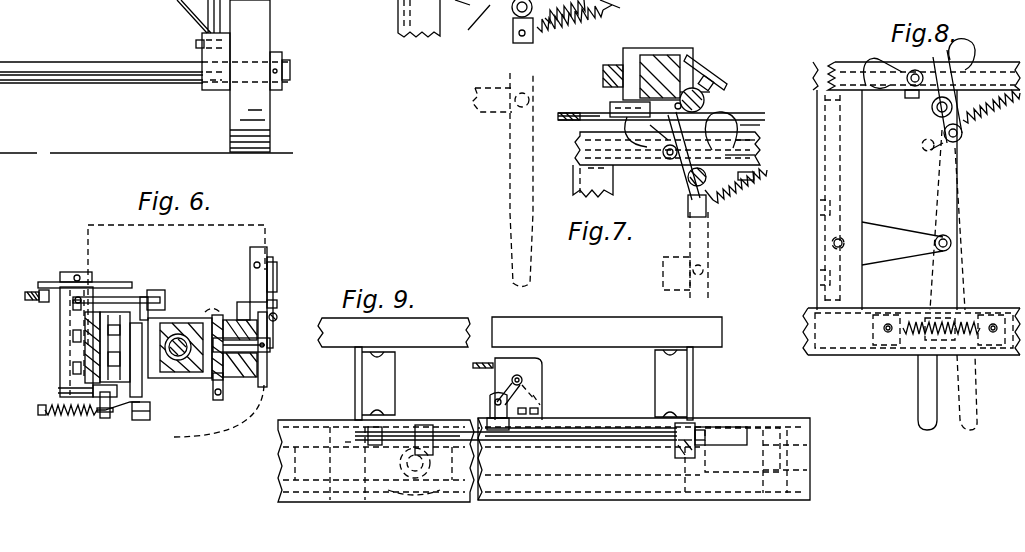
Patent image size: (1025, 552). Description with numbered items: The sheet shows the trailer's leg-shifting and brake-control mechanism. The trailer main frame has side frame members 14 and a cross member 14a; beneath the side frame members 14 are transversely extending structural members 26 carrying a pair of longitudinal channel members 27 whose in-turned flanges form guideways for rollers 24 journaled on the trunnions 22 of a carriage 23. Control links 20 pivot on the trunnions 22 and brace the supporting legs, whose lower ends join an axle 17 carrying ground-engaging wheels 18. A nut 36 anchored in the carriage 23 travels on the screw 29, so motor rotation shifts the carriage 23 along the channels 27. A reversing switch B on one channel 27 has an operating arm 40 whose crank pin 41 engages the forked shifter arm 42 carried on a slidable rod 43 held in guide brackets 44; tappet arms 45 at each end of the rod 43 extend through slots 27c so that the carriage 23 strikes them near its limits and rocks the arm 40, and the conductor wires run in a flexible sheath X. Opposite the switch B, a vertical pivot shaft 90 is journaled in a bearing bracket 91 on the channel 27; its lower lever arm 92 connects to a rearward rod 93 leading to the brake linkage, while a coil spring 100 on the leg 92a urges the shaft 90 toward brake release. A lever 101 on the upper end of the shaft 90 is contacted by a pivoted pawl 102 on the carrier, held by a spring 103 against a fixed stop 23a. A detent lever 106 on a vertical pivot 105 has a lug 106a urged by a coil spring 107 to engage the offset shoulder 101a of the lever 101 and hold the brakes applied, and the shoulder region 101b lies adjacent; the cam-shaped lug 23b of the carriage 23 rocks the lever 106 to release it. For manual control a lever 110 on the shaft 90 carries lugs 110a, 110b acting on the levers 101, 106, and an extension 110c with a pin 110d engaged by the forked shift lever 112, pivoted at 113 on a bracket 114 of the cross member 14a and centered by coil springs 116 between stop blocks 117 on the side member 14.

In FIG. 9, the side frame members 14 is at (582, 328).
In FIG. 7, the cross member 14a is at (398, 33).
In FIG. 6, the axle 17 is at (50, 62).
In FIG. 6, the ground-engaging wheels 18 is at (233, 114).
In FIG. 6, the control links 20 is at (214, 395).
In FIG. 6, the trunnions 22 is at (62, 336).
In FIG. 6, the carriage 23 is at (206, 312).
In FIG. 7, the carriage 23 is at (690, 60).
In FIG. 9, the carriage 23 is at (382, 495).
In FIG. 7, the fixed stop 23a is at (714, 96).
In FIG. 7, the cam-shaped lug 23b is at (578, 130).
In FIG. 6, the rollers 24 is at (239, 302).
In FIG. 9, the transversely extending structural members 26 is at (364, 378).
In FIG. 6, the channel members 27 is at (108, 352).
In FIG. 7, the channel members 27 is at (748, 135).
In FIG. 8, the channel members 27 is at (833, 62).
In FIG. 9, the channel members 27 is at (770, 436).
In FIG. 9, the slots 27c is at (395, 445).
In FIG. 6, the screw 29 is at (175, 320).
In FIG. 7, the screw 29 is at (706, 72).
In FIG. 6, the nut 36 is at (181, 336).
In FIG. 7, the nut 36 is at (655, 60).
In FIG. 6, the switch operating arm 40 is at (255, 287).
In FIG. 7, the switch operating arm 40 is at (512, 26).
In FIG. 9, the switch operating arm 40 is at (498, 385).
In FIG. 6, the crank pin 41 is at (275, 296).
In FIG. 9, the crank pin 41 is at (480, 398).
In FIG. 6, the shifter arm 42 is at (276, 306).
In FIG. 9, the shifter arm 42 is at (480, 410).
In FIG. 6, the slidable rod 43 is at (277, 320).
In FIG. 9, the slidable rod 43 is at (568, 430).
In FIG. 6, the guide brackets 44 is at (270, 346).
In FIG. 9, the guide brackets 44 is at (420, 425).
In FIG. 6, the tappet arms 45 is at (232, 312).
In FIG. 9, the tappet arms 45 is at (375, 427).
In FIG. 6, the pivot shaft 90 is at (88, 354).
In FIG. 7, the pivot shaft 90 is at (692, 185).
In FIG. 8, the pivot shaft 90 is at (930, 110).
In FIG. 6, the bearing bracket 91 is at (60, 314).
In FIG. 7, the bearing bracket 91 is at (500, 2).
In FIG. 8, the bearing bracket 91 is at (910, 90).
In FIG. 6, the lever arm 92 is at (128, 410).
In FIG. 7, the lever arm 92 is at (630, 142).
In FIG. 8, the lever arm 92 is at (885, 58).
In FIG. 6, the oppositely extending leg 92a is at (53, 412).
In FIG. 7, the oppositely extending leg 92a is at (514, 50).
In FIG. 6, the rearwardly extending rod 93 is at (144, 420).
In FIG. 7, the rearwardly extending rod 93 is at (580, 113).
In FIG. 6, the coil spring 100 is at (95, 415).
In FIG. 7, the coil spring 100 is at (565, 33).
In FIG. 8, the coil spring 100 is at (980, 125).
In FIG. 6, the lever 101 is at (100, 298).
In FIG. 8, the lever 101 is at (975, 58).
In FIG. 7, the offset shoulder 101a is at (600, 12).
In FIG. 8, the bar end 101b is at (968, 52).
In FIG. 6, the pivoted pawl 102 is at (143, 297).
In FIG. 7, the pivoted pawl 102 is at (706, 102).
In FIG. 7, the spring 103 is at (712, 84).
In FIG. 7, the vertical pivot 105 is at (446, 4).
In FIG. 7, the detent lever 106 is at (660, 128).
In FIG. 8, the detent lever 106 is at (878, 85).
In FIG. 7, the lug 106a is at (728, 120).
In FIG. 8, the lug 106a is at (965, 45).
In FIG. 7, the coil spring 107 is at (510, 15).
In FIG. 7, the manual lever 110 is at (758, 140).
In FIG. 8, the manual lever 110 is at (958, 78).
In FIG. 8, the downwardly extending lug 110a is at (828, 72).
In FIG. 8, the downwardly extending lug 110b is at (958, 40).
In FIG. 8, the extension 110c is at (962, 138).
In FIG. 8, the vertically disposed pin 110d is at (950, 150).
In FIG. 7, the shift lever 112 is at (512, 180).
In FIG. 8, the shift lever 112 is at (960, 204).
In FIG. 8, the pivot 113 is at (952, 243).
In FIG. 7, the bracket 114 is at (478, 108).
In FIG. 8, the bracket 114 is at (890, 238).
In FIG. 8, the coil springs 116 is at (900, 357).
In FIG. 8, the stop blocks 117 is at (865, 352).
In FIG. 6, the reversing switch B is at (268, 289).
In FIG. 9, the reversing switch B is at (542, 372).
In FIG. 9, the metal flexible sheath X is at (473, 366).